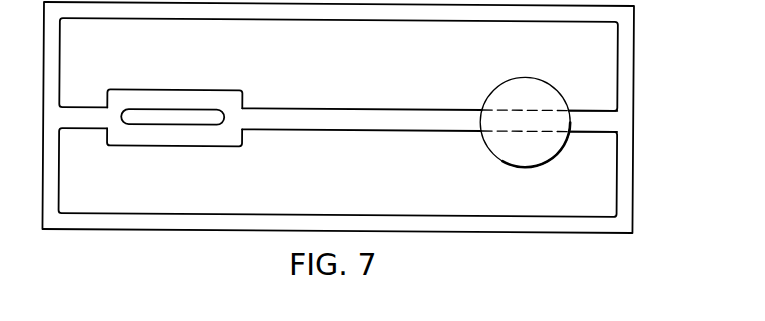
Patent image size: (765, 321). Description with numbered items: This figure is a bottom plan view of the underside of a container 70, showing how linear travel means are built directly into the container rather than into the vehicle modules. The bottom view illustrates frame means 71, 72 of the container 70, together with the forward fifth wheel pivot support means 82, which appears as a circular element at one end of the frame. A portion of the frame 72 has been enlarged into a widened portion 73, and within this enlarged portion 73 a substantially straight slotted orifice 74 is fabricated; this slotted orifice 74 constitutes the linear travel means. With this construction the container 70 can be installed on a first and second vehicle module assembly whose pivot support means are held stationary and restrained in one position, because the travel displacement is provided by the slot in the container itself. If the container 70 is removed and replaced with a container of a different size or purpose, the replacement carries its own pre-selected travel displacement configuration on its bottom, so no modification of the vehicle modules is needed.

The container 70 is at (646, 42).
The frame means 71 is at (624, 190).
The frame means 72 is at (419, 121).
The paddle portion 73 is at (168, 136).
The slotted orifice 74 is at (191, 112).
The forward fifth wheel pivot support means 82 is at (555, 105).